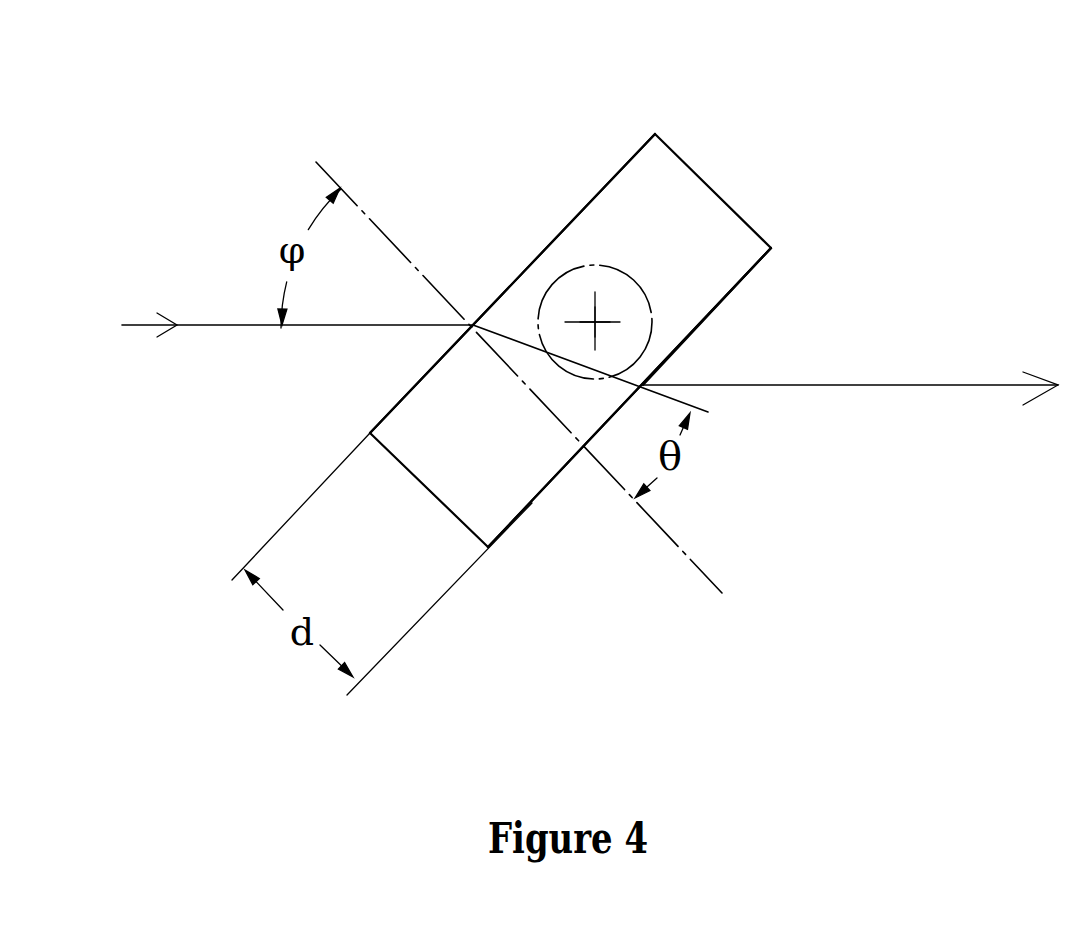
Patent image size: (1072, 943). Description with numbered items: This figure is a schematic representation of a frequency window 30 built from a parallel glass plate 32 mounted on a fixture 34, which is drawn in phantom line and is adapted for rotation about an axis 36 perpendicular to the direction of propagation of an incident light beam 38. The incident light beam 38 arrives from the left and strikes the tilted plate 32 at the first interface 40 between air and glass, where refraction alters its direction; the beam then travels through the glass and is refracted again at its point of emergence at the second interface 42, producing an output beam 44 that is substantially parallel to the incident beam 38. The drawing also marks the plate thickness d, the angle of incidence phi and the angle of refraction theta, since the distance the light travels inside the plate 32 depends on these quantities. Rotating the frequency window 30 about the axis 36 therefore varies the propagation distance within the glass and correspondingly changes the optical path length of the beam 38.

The frequency window 30 is at (833, 118).
The parallel glass plate 32 is at (746, 297).
The fixture 34 is at (607, 266).
The axis 36 is at (595, 322).
The incident light beam 38 is at (208, 325).
The first interface 40 is at (496, 231).
The second interface 42 is at (692, 332).
The output beam 44 is at (961, 385).